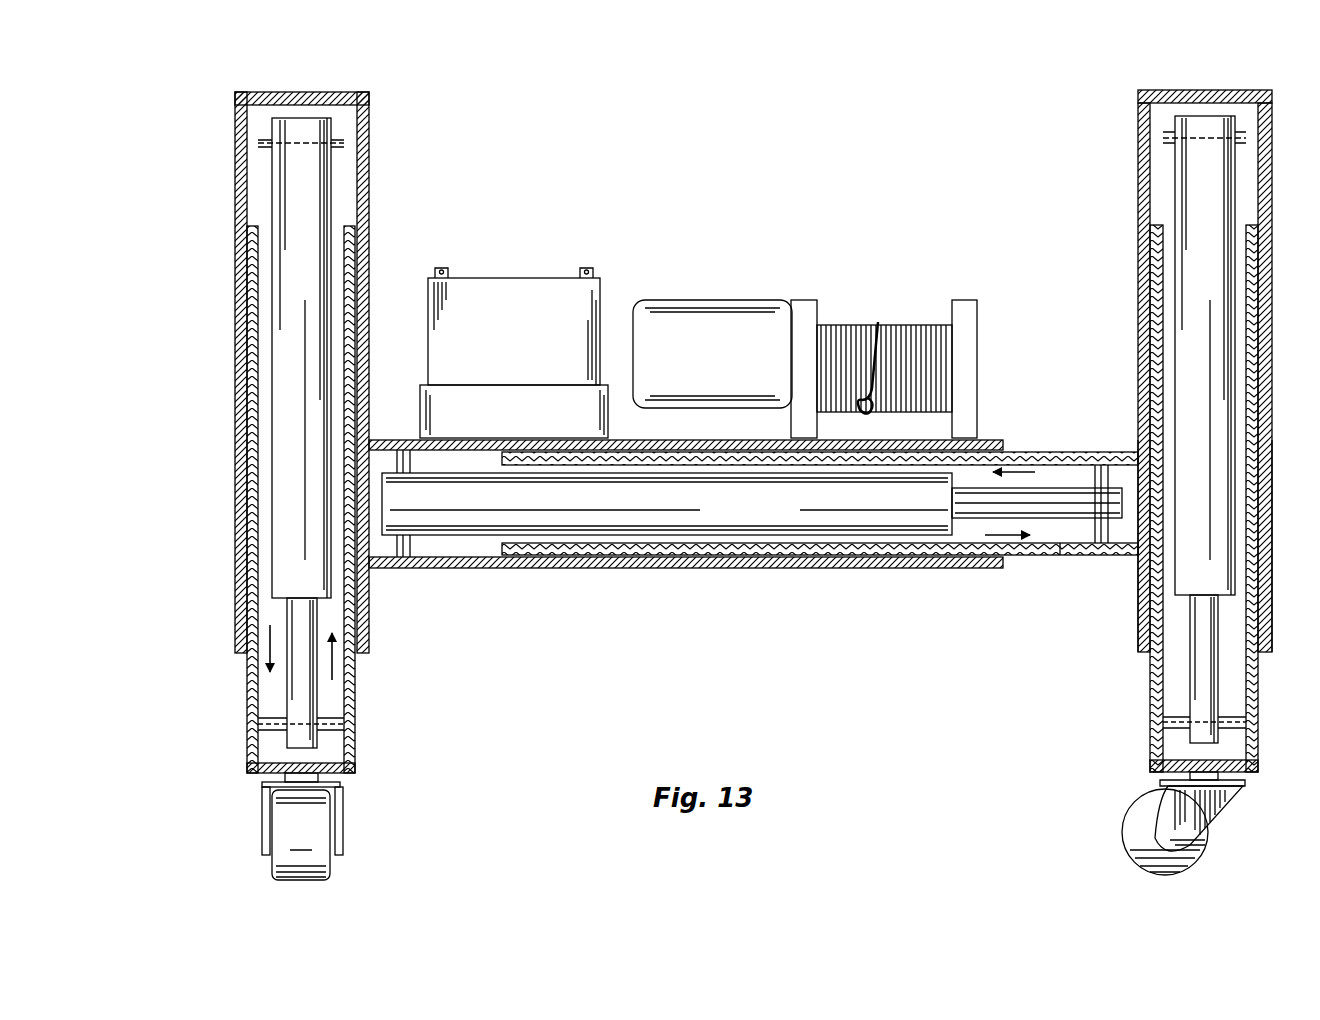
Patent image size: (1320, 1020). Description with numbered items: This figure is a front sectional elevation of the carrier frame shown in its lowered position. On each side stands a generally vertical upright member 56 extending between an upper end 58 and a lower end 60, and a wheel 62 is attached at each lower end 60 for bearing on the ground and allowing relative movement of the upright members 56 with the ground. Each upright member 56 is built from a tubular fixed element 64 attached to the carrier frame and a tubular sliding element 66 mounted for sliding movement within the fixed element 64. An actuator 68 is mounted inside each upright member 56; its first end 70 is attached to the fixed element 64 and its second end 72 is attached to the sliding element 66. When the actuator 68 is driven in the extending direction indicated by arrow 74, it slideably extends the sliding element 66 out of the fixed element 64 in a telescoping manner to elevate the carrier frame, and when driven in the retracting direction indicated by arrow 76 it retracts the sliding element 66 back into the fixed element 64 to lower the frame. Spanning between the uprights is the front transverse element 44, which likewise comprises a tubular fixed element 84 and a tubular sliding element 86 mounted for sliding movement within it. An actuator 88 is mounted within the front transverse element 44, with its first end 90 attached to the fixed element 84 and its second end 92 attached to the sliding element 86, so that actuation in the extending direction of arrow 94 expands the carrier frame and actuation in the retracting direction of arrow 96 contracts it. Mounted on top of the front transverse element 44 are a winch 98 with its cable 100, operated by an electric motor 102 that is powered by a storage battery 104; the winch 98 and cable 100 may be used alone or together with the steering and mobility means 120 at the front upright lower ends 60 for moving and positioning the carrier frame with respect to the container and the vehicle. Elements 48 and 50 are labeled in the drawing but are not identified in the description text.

The front transverse element 44 is at (651, 568).
The cylinder mounting bracket 48 is at (410, 545).
The right leg assembly 50 is at (1112, 565).
The upright member 56 is at (369, 192).
The upper end 58 is at (350, 92).
The lower end 60 is at (355, 768).
The wheel 62 is at (325, 880).
The tubular fixed element 64 is at (358, 244).
The tubular sliding element 66 is at (355, 714).
The actuator 68 is at (272, 292).
The first end 70 is at (335, 152).
The second end 72 is at (287, 740).
The arrow 74 is at (248, 672).
The arrow 76 is at (335, 663).
The tubular fixed element 84 is at (838, 568).
The tubular sliding element 86 is at (1075, 557).
The actuator 88 is at (740, 557).
The first end 90 is at (422, 537).
The second end 92 is at (1100, 465).
The arrow 94 is at (997, 537).
The arrow 96 is at (1020, 472).
The winch 98 is at (808, 300).
The cable 100 is at (893, 325).
The electric motor 102 is at (715, 300).
The storage battery 104 is at (512, 278).
The steering and mobility means 120 is at (343, 812).